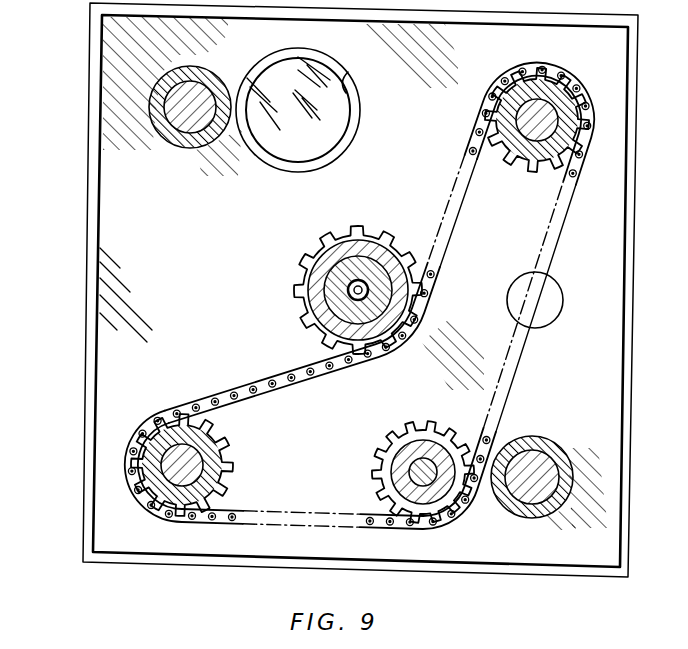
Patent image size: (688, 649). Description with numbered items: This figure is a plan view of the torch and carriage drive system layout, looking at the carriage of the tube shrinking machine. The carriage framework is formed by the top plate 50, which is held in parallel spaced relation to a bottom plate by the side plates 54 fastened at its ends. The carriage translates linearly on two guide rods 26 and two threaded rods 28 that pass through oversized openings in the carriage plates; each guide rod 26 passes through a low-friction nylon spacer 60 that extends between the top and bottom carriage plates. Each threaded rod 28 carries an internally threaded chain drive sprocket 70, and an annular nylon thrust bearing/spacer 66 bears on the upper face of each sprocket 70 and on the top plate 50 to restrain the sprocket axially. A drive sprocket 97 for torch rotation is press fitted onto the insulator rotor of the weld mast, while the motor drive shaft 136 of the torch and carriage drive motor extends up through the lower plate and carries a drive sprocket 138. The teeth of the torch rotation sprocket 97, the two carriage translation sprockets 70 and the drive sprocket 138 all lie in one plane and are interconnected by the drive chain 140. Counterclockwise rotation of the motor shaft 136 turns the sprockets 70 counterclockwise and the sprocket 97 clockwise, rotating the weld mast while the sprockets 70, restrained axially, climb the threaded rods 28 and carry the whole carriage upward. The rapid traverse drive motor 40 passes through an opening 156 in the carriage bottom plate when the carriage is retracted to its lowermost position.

The guide rod 26 is at (183, 128).
The threaded rod 28 is at (546, 130).
The rapid traverse drive motor 40 is at (340, 133).
The top plate 50 is at (115, 335).
The side plate 54 is at (85, 407).
The spacer 60 is at (173, 70).
The threaded rod spacer 66 is at (529, 154).
The chain drive sprocket 70 is at (504, 157).
The drive sprocket 97 is at (336, 237).
The motor drive shaft 136 is at (423, 460).
The drive sprocket 138 is at (380, 452).
The drive chain 140 is at (262, 385).
The opening 156 is at (348, 90).